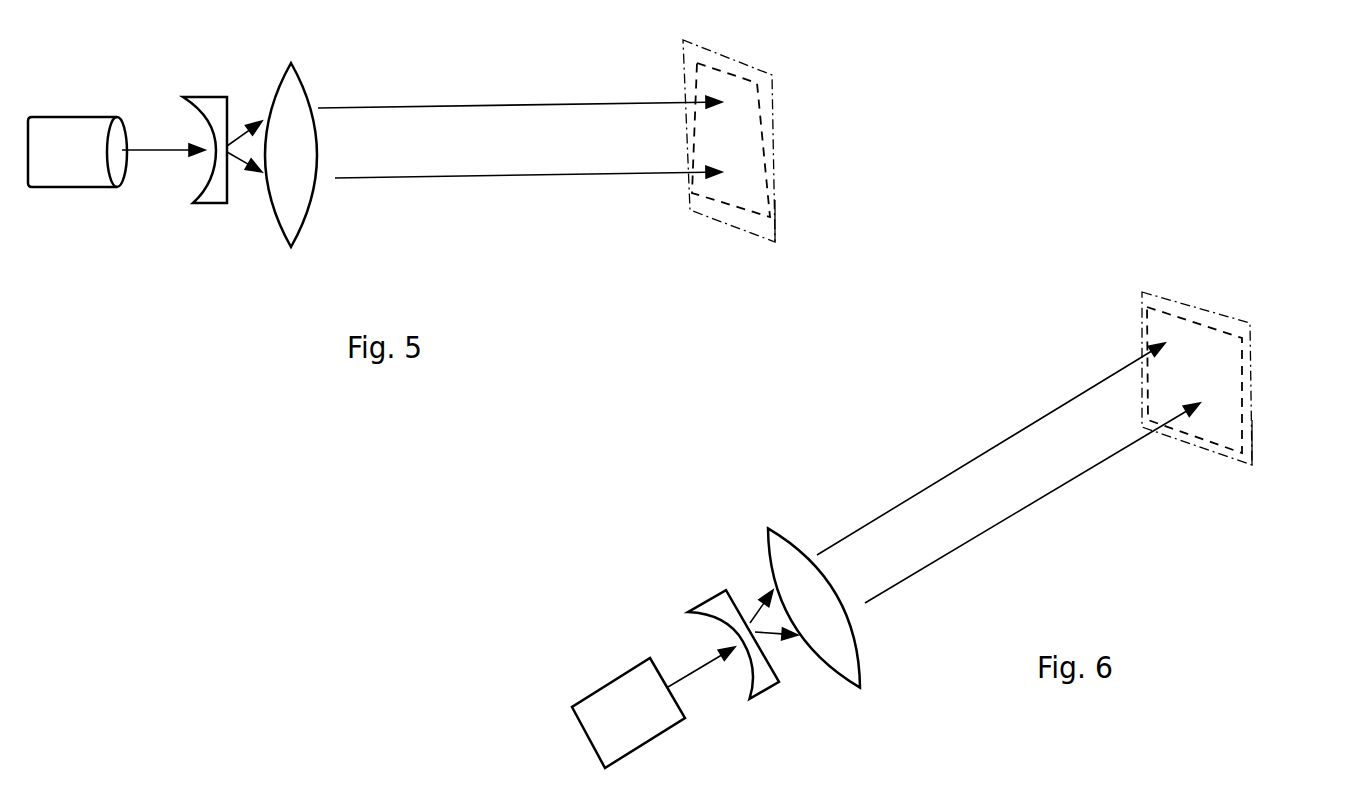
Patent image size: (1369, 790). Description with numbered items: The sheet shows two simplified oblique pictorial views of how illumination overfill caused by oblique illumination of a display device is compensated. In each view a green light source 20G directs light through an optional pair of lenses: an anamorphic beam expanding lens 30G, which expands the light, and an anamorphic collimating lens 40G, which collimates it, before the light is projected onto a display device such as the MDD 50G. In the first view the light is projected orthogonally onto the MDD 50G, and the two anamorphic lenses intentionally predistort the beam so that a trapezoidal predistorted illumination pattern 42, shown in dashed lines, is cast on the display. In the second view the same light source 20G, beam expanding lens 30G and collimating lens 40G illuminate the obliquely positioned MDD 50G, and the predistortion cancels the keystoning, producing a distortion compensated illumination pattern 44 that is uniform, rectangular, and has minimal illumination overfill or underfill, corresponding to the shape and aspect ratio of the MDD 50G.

In FIG. 5, the green light source 20G is at (82, 187).
In FIG. 6, the green light source 20G is at (628, 672).
In FIG. 5, the anamorphic beam expanding lens 30G is at (213, 203).
In FIG. 6, the anamorphic beam expanding lens 30G is at (715, 595).
In FIG. 5, the anamorphic collimating lens 40G is at (303, 220).
In FIG. 6, the anamorphic collimating lens 40G is at (772, 527).
In FIG. 5, the MDD 50G is at (772, 108).
In FIG. 6, the MDD 50G is at (1143, 297).
In FIG. 5, the predistorted illumination pattern 42 is at (778, 216).
In FIG. 6, the distortion compensated illumination pattern 44 is at (1256, 440).